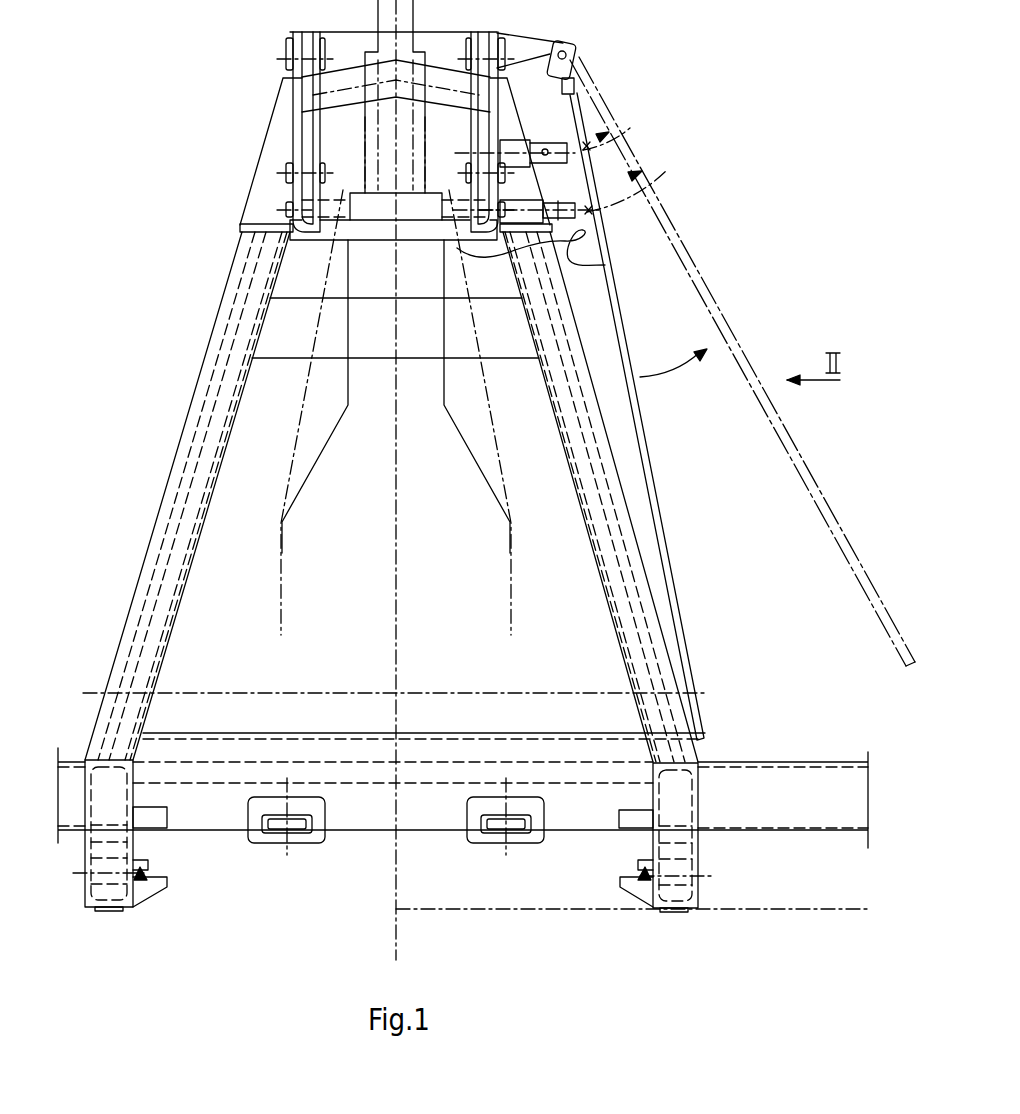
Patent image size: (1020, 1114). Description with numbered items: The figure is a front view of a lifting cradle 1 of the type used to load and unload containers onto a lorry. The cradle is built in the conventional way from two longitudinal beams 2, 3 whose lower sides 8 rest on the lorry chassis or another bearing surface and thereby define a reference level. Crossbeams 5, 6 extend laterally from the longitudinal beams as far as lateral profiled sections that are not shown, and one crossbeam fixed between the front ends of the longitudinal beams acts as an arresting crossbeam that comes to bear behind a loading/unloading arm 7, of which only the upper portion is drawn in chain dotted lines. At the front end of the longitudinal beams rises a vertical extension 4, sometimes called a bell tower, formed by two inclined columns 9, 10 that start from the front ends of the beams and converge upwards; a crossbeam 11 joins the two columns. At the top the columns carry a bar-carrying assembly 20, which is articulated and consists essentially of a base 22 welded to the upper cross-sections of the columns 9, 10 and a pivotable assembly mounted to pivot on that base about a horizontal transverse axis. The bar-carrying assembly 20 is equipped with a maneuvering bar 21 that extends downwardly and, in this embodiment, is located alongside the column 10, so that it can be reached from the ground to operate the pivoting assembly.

The lifting cradle 1 is at (128, 344).
The longitudinal beam 2 is at (83, 847).
The longitudinal beam 3 is at (698, 857).
The vertical extension 4 is at (185, 258).
The crossbeam 5 is at (74, 757).
The crossbeam 6 is at (478, 735).
The loading/unloading arm 7 is at (280, 460).
The lower sides of the longitudinal beams 8 is at (110, 912).
The inclined column 9 is at (163, 490).
The inclined column 10 is at (632, 503).
The crossbeam 11 is at (508, 368).
The bar-carrying assembly 20 is at (206, 98).
The maneuvering bar 21 is at (663, 420).
The base 22 is at (605, 265).